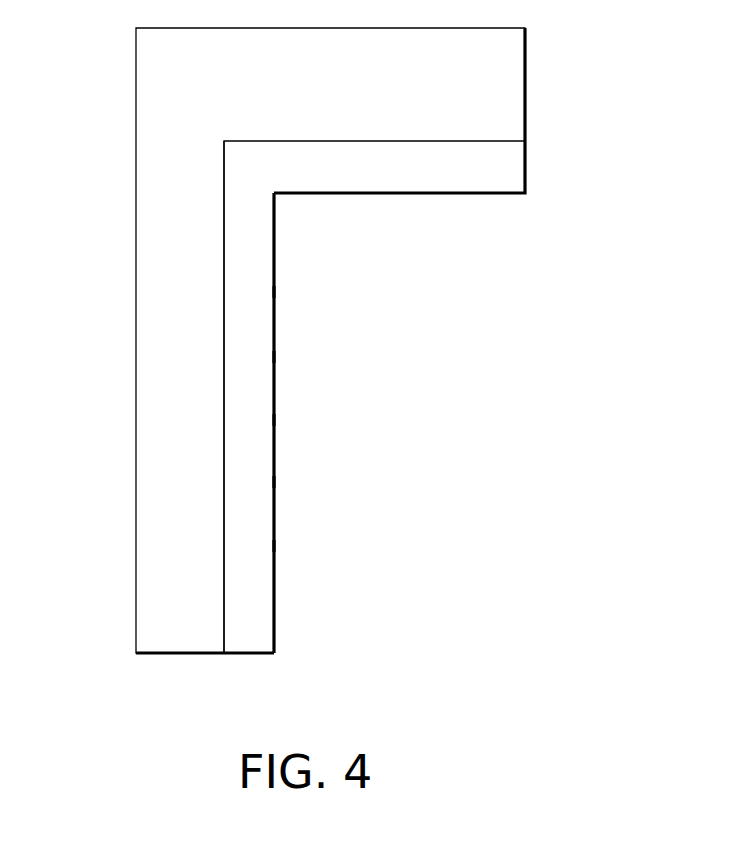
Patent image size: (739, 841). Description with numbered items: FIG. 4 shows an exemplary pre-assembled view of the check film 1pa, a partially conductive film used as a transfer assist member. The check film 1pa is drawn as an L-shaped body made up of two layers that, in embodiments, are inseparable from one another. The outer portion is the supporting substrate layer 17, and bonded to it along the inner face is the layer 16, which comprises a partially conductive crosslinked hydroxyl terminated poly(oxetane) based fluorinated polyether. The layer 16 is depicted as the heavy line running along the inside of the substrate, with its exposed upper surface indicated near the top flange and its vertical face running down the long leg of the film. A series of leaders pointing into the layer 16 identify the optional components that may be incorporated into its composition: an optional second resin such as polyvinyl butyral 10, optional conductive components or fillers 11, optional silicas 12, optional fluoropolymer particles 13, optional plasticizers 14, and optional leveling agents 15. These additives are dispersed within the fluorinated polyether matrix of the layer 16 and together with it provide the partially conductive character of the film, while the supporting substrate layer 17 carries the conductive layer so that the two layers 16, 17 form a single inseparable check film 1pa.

The check film 1pa is at (116, 317).
The polyvinyl butyral 10 is at (248, 546).
The conductive components or fillers 11 is at (248, 482).
The silicas 12 is at (248, 420).
The fluoropolymer particles 13 is at (248, 357).
The plasticizers 14 is at (248, 292).
The leveling agents 15 is at (503, 167).
The layer 16 is at (247, 655).
The supporting substrate layer 17 is at (178, 655).